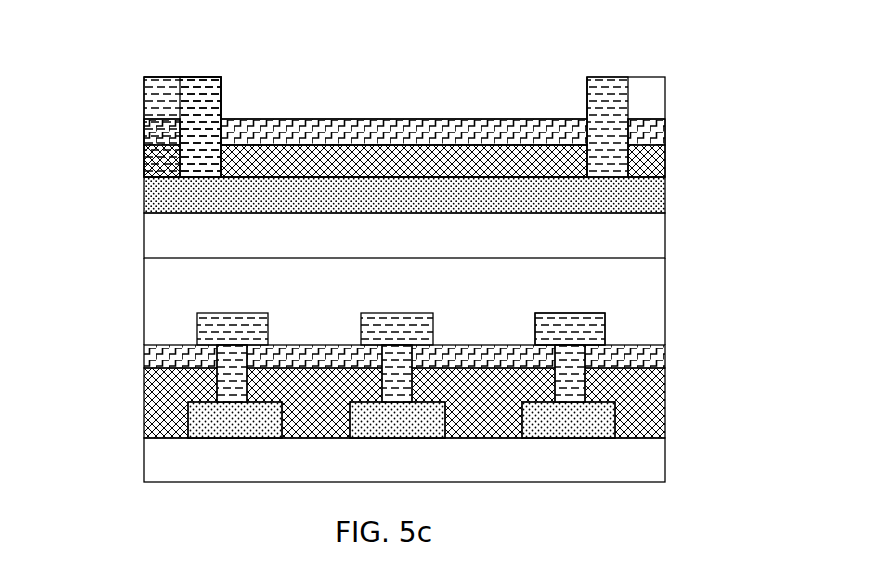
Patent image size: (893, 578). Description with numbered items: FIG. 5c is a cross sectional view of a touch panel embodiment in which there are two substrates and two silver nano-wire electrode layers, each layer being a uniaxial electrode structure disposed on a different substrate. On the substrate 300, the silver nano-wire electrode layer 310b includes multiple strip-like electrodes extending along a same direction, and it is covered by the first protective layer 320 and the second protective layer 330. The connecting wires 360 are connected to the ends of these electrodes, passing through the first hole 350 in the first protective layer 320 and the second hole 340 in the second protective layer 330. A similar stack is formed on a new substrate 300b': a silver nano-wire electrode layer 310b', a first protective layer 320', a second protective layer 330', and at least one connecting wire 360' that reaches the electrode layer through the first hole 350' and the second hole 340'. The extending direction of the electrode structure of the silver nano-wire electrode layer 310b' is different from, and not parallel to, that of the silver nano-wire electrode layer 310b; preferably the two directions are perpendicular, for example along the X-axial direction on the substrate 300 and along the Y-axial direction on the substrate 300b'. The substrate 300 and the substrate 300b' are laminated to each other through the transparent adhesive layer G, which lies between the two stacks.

The second hole 340 is at (214, 101).
The first hole 350 is at (234, 125).
The connecting wire 360 is at (633, 101).
The second protective layer 330 is at (449, 112).
The first protective layer 320 is at (449, 158).
The silver nano-wire electrode layer 310b is at (450, 195).
The substrate 300 is at (648, 237).
The transparent adhesive layer G is at (637, 293).
The connecting wire 360' is at (330, 309).
The second protective layer 330' is at (360, 343).
The first protective layer 320' is at (360, 399).
The second hole 340' is at (641, 327).
The first hole 350' is at (482, 373).
The silver nano-wire electrode layer 310b' is at (332, 420).
The substrate 300b' is at (357, 460).